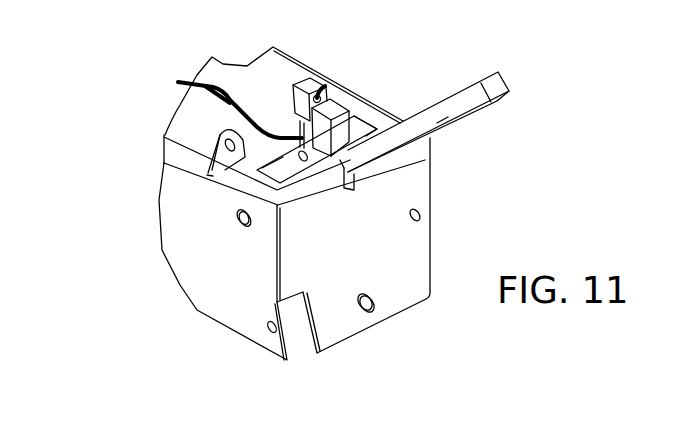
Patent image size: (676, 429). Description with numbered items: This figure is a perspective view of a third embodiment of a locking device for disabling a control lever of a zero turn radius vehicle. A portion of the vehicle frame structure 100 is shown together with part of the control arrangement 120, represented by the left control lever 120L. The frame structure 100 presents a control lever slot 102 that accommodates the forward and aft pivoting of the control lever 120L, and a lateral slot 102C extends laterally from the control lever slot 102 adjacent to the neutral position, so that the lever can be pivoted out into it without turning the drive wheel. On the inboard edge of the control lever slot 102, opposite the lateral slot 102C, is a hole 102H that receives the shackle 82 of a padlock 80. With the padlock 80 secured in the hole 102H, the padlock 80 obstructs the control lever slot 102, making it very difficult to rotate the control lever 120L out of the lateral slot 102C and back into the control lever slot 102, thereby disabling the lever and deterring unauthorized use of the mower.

The padlock 80 is at (302, 86).
The shackle 82 is at (293, 131).
The vehicle frame structure 100 is at (128, 254).
The control lever slot 102 is at (358, 126).
The hole 102H is at (180, 83).
The lateral slot 102C is at (356, 186).
The control arrangement 120 is at (527, 68).
The control lever 120L is at (437, 123).